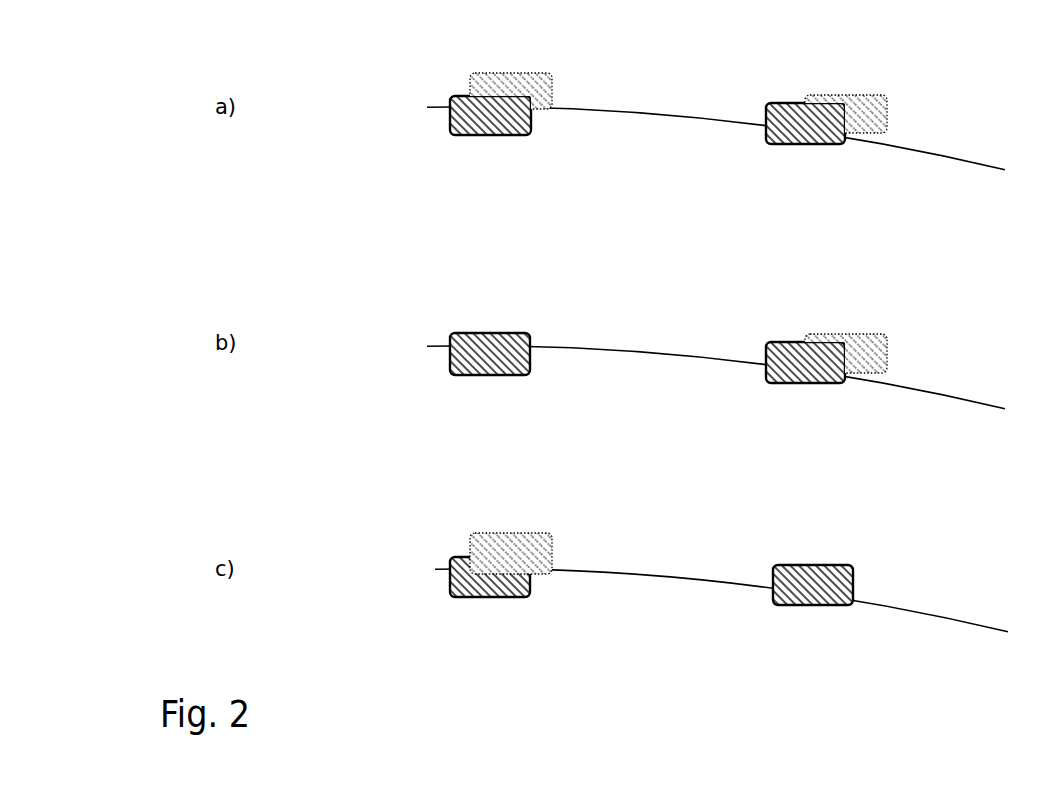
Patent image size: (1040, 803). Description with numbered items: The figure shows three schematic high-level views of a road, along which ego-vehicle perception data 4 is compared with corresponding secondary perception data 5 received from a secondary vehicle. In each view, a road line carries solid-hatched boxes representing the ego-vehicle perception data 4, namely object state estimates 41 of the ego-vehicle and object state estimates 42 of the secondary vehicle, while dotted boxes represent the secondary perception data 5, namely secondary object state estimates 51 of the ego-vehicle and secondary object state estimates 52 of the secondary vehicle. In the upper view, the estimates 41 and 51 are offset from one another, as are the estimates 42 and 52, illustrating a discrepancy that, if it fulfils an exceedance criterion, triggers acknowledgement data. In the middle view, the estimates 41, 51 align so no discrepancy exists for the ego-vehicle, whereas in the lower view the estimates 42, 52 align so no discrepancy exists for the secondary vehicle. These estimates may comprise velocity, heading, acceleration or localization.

The ego-vehicle perception data 4 is at (605, 386).
The object state estimates of the ego-vehicle 41 is at (450, 133).
The object state estimates of the secondary vehicle 42 is at (764, 145).
The secondary perception data 5 is at (737, 304).
The secondary object state estimates of the ego-vehicle 51 is at (555, 75).
The secondary object state estimates of the secondary vehicle 52 is at (892, 100).